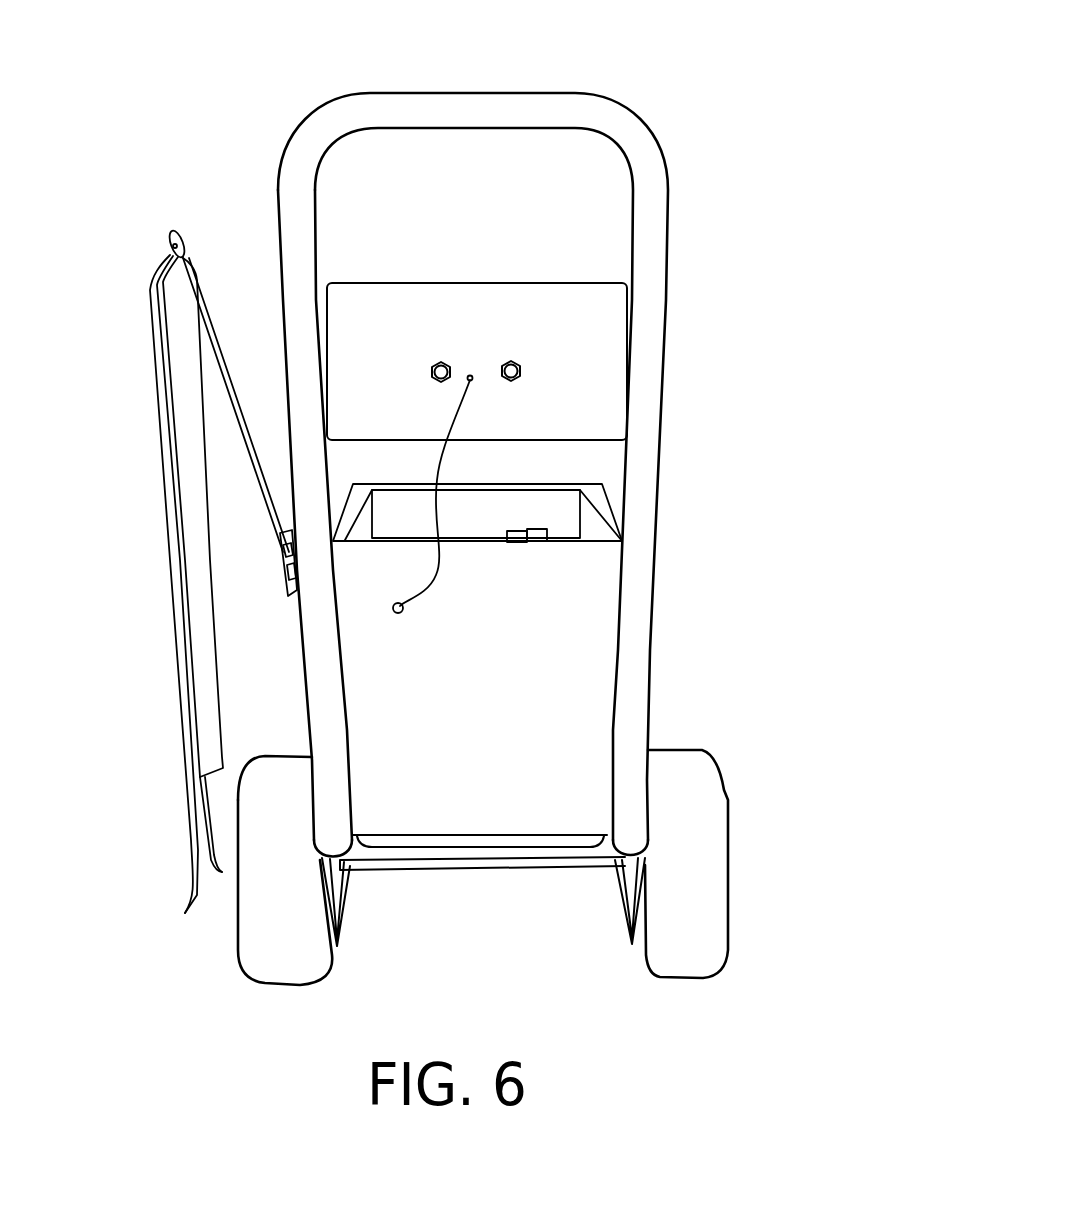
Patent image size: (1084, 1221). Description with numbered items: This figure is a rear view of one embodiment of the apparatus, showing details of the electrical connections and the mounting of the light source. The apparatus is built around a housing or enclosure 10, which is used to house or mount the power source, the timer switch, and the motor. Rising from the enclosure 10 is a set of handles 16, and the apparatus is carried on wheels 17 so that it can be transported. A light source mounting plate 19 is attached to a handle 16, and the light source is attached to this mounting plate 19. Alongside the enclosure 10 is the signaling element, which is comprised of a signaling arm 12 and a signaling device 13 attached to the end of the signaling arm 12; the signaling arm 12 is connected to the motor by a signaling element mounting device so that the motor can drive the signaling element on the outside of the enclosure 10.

The enclosure 10 is at (592, 630).
The signaling arm 12 is at (233, 348).
The signaling device 13 is at (130, 510).
The handles 16 is at (613, 83).
The wheels 17 is at (753, 760).
The light source mounting plate 19 is at (595, 353).